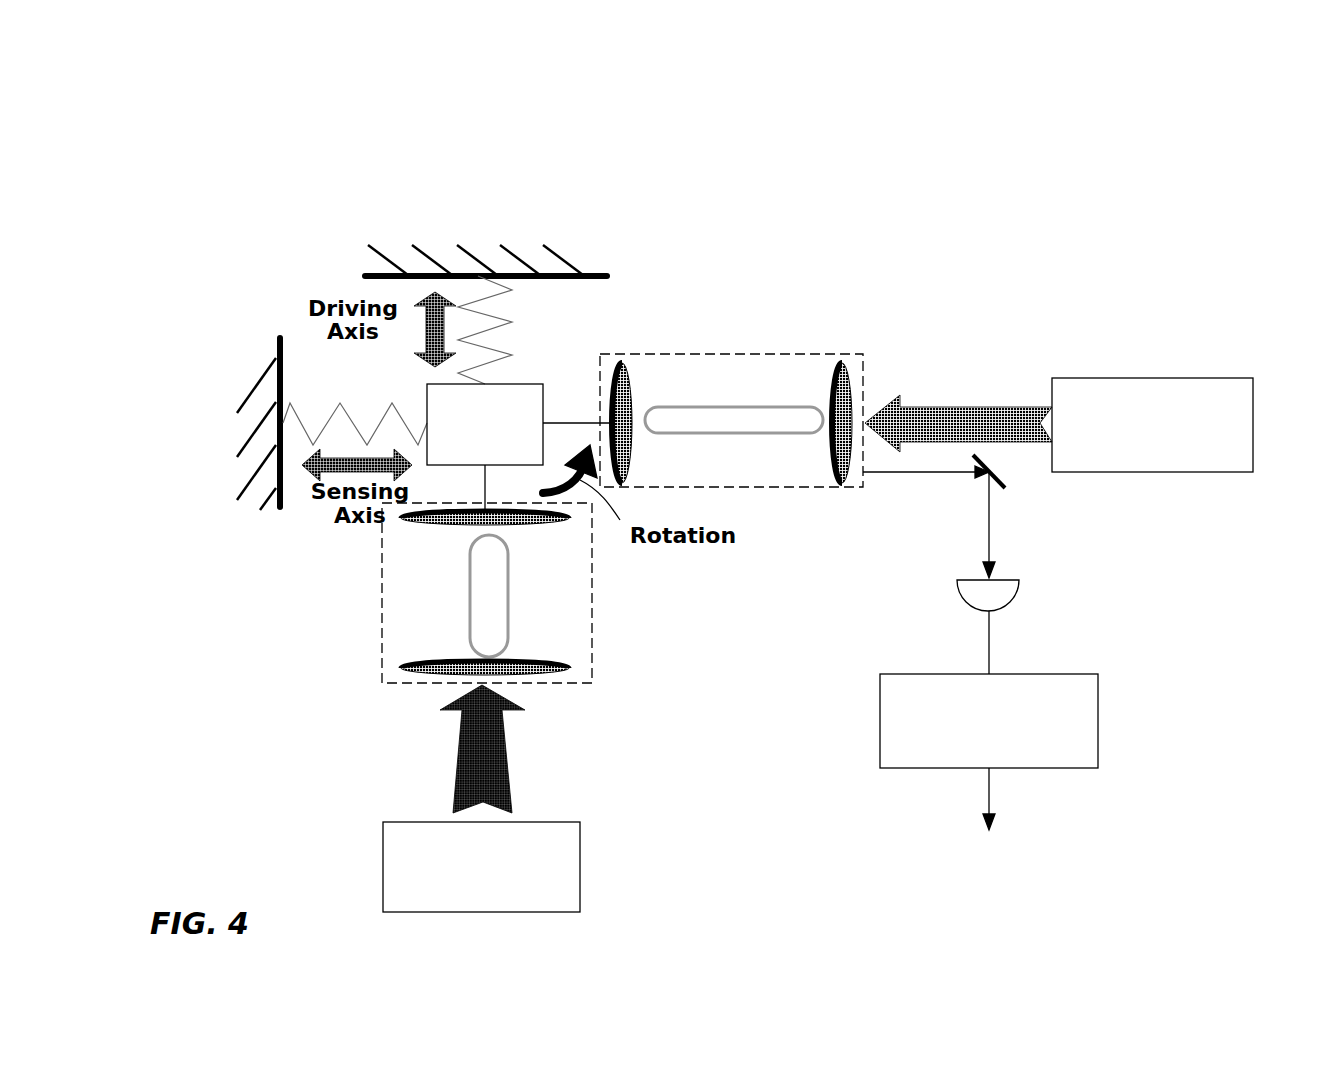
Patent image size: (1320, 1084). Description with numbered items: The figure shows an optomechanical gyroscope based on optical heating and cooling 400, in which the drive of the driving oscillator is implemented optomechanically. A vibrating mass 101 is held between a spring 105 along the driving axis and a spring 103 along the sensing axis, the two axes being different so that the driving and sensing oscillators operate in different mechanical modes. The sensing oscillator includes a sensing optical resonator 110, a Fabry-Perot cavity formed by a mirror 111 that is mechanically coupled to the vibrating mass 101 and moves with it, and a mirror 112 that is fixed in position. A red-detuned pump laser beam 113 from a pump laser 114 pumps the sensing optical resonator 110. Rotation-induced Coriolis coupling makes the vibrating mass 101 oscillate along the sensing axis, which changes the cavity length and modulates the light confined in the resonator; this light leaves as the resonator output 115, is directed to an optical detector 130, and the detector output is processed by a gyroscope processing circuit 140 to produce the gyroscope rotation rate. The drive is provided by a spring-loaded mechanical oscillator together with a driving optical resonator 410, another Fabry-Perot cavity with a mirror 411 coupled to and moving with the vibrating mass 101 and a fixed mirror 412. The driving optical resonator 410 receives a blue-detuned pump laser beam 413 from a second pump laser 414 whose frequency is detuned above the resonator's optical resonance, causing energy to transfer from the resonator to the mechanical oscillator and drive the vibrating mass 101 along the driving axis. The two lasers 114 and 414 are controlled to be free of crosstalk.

The optomechanical gyroscope based on optical heating and cooling 400 is at (1078, 222).
The vibrating mass 101 is at (470, 459).
The spring 103 is at (406, 430).
The spring 105 is at (505, 330).
The sensing optical resonator 110 is at (739, 354).
The mirror 111 is at (632, 378).
The mirror 112 is at (852, 377).
The pump laser beam 113 is at (963, 407).
The pump laser 114 is at (1137, 446).
The resonator output 115 is at (942, 472).
The optical detector 130 is at (1013, 583).
The gyroscope processing circuit 140 is at (974, 755).
The driving optical resonator 410 is at (408, 690).
The mirror 411 is at (425, 525).
The mirror 412 is at (530, 663).
The pump laser beam 413 is at (503, 745).
The pump laser 414 is at (467, 889).